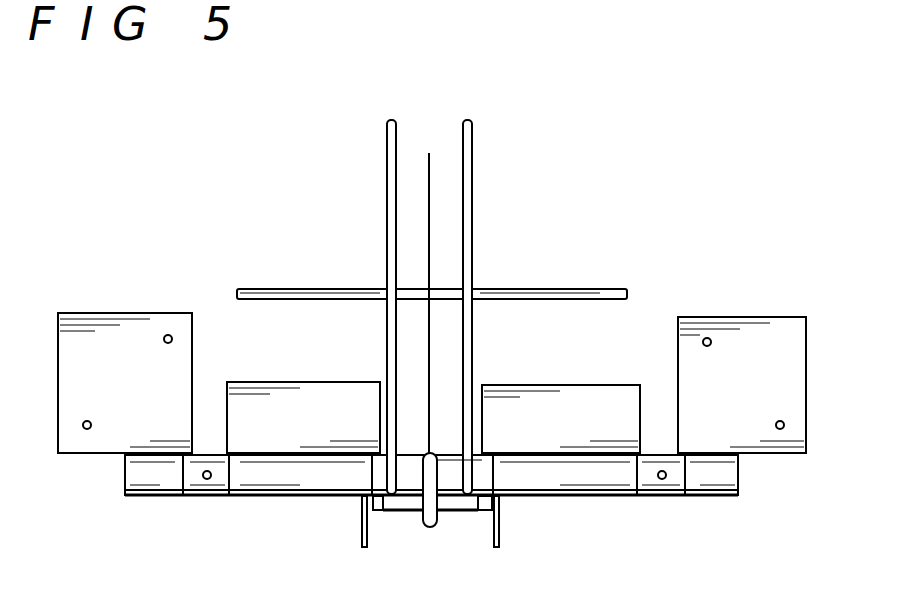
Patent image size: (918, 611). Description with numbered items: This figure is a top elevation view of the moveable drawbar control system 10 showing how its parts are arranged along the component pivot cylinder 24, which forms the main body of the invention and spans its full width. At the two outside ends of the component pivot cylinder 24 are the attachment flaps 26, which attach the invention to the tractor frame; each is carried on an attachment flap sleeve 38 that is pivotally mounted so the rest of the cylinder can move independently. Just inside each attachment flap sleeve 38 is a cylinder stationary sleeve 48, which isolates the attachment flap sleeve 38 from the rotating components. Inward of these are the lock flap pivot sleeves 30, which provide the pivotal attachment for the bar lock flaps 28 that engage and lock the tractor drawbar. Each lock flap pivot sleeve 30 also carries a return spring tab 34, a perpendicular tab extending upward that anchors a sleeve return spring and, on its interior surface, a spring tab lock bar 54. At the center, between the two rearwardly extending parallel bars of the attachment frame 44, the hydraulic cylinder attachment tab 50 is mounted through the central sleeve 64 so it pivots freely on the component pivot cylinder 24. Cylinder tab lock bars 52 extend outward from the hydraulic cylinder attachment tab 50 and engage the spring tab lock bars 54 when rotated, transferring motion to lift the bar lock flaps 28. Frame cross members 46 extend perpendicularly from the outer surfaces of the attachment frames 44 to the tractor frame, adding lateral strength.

The moveable drawbar control system 10 is at (343, 248).
The component pivot cylinder 24 is at (117, 507).
The attachment flap 26 is at (102, 328).
The bar lock flap 28 is at (270, 397).
The lock flap pivot sleeve 30 is at (255, 498).
The return spring tab 34 is at (358, 535).
The attachment flap sleeve 38 is at (132, 477).
The attachment frame 44 is at (387, 163).
The frame cross member 46 is at (260, 285).
The cylinder stationary sleeve 48 is at (197, 500).
The hydraulic cylinder attachment tab 50 is at (432, 284).
The cylinder tab lock bar 52 is at (454, 505).
The spring tab lock bar 54 is at (370, 502).
The central sleeve 64 is at (445, 467).